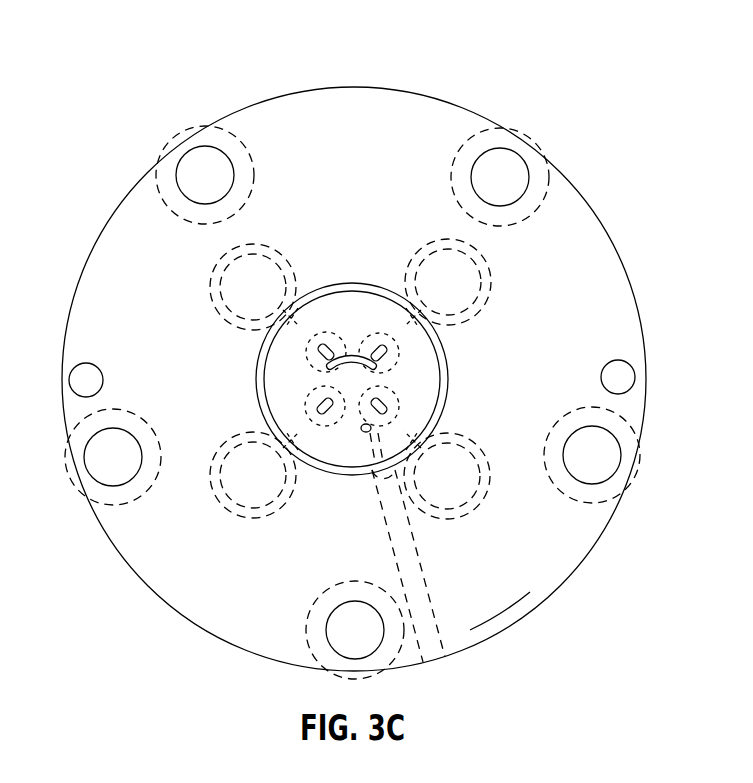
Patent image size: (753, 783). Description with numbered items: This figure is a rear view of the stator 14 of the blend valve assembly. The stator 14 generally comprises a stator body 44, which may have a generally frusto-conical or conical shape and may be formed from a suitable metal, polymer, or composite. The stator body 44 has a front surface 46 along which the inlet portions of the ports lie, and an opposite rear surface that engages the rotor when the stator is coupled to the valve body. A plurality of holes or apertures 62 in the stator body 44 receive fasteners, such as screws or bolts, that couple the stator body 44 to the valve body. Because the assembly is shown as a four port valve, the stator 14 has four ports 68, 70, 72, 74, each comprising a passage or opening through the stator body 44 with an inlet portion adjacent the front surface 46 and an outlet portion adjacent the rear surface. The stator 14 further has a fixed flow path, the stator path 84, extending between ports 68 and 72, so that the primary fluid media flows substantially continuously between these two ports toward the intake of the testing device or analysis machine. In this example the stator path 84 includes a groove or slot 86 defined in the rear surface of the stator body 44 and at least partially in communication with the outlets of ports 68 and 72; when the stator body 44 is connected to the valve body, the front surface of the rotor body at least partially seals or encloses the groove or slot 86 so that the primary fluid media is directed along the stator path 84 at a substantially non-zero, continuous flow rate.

The stator 14 is at (278, 80).
The stator body 44 is at (550, 166).
The front surface 46 is at (496, 608).
The holes or apertures 62 is at (72, 391).
The port 68 is at (274, 249).
The port 70 is at (486, 494).
The port 72 is at (491, 291).
The port 74 is at (252, 519).
The stator path 84 is at (374, 369).
The groove or slot 86 is at (354, 352).